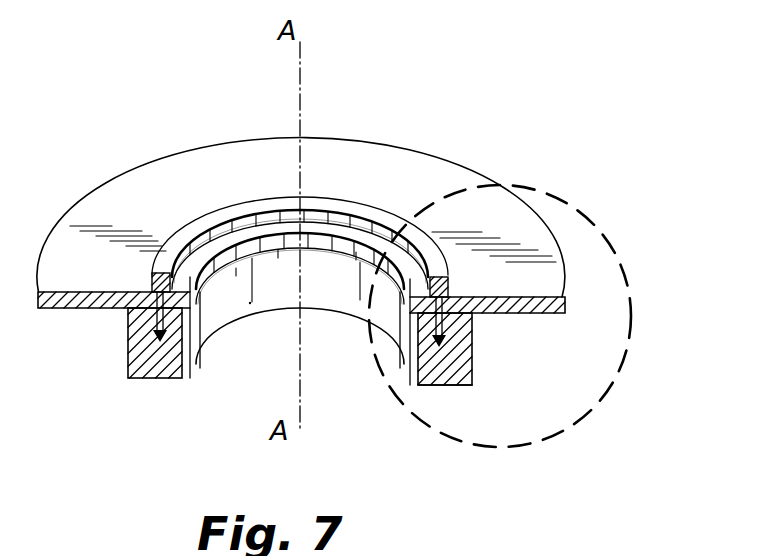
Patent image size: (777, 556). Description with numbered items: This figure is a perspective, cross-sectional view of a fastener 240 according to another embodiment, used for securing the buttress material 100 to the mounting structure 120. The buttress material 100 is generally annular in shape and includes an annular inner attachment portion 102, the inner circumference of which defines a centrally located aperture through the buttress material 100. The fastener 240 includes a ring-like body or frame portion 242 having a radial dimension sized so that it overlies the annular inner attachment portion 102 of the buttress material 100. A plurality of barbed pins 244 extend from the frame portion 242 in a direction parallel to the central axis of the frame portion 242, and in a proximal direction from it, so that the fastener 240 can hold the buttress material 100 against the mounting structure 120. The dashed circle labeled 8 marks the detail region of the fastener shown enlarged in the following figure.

The buttress material 100 is at (446, 162).
The annular inner attachment portion 102 is at (316, 238).
The mounting structure 120 is at (470, 373).
The fastener 240 is at (258, 188).
The frame portion 242 is at (203, 212).
The barbed pins 244 is at (128, 341).
The detail view circle (FIG. 8) 8 is at (606, 221).